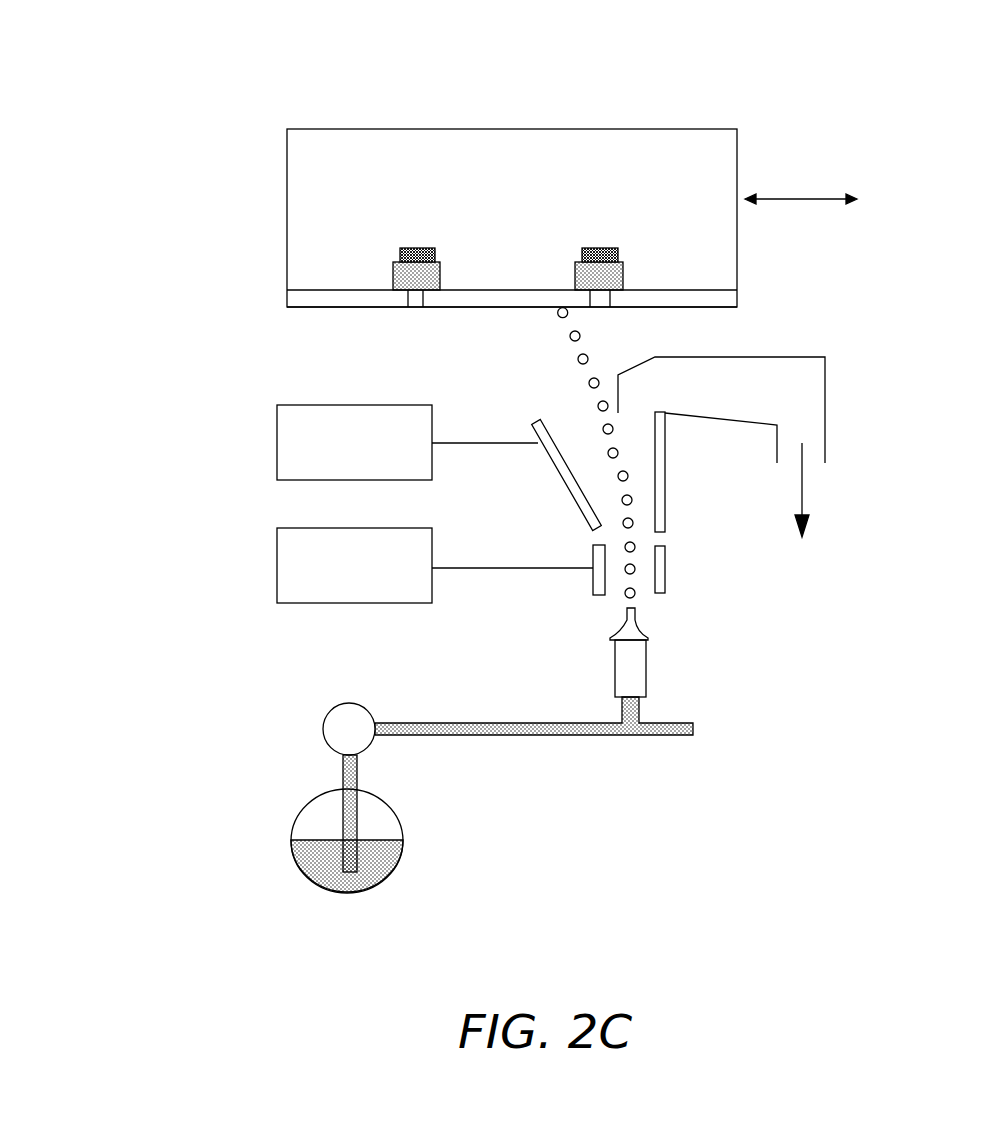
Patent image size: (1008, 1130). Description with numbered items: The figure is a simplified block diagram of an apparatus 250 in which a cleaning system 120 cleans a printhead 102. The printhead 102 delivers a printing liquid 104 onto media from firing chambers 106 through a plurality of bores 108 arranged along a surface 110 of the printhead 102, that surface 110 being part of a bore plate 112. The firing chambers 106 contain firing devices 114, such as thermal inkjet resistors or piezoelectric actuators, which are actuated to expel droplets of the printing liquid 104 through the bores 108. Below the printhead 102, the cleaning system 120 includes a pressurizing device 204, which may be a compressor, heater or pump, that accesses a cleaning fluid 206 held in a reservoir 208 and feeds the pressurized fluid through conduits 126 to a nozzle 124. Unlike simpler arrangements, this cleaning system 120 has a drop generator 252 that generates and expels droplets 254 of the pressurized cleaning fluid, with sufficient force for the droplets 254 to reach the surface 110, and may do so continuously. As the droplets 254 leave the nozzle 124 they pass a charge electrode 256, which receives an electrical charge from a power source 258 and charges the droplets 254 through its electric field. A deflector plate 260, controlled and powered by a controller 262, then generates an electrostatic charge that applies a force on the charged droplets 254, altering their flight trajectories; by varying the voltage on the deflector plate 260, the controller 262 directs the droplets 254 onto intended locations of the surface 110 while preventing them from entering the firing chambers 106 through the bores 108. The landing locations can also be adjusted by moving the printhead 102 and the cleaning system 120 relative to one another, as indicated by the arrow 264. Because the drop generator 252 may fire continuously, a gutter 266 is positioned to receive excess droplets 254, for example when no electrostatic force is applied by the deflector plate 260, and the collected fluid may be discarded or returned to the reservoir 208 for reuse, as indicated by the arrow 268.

The apparatus 250 is at (519, 28).
The printhead 102 is at (575, 128).
The printing liquid 104 is at (395, 272).
The firing chambers 106 is at (437, 263).
The bores 108 is at (425, 305).
The surface 110 is at (329, 308).
The bore plate 112 is at (287, 303).
The firing devices 114 is at (403, 250).
The cleaning system 120 is at (157, 441).
The nozzle 124 is at (617, 645).
The conduits 126 is at (540, 737).
The pressurizing device 204 is at (325, 730).
The cleaning fluid 206 is at (378, 838).
The reservoir 208 is at (295, 822).
The drop generator 252 is at (648, 660).
The droplets 254 is at (568, 336).
The charge electrode 256 is at (665, 570).
The power source 258 is at (277, 590).
The deflector plate 260 is at (665, 485).
The controller 262 is at (277, 468).
The arrow 264 is at (803, 196).
The gutter 266 is at (765, 357).
The arrow 268 is at (805, 495).